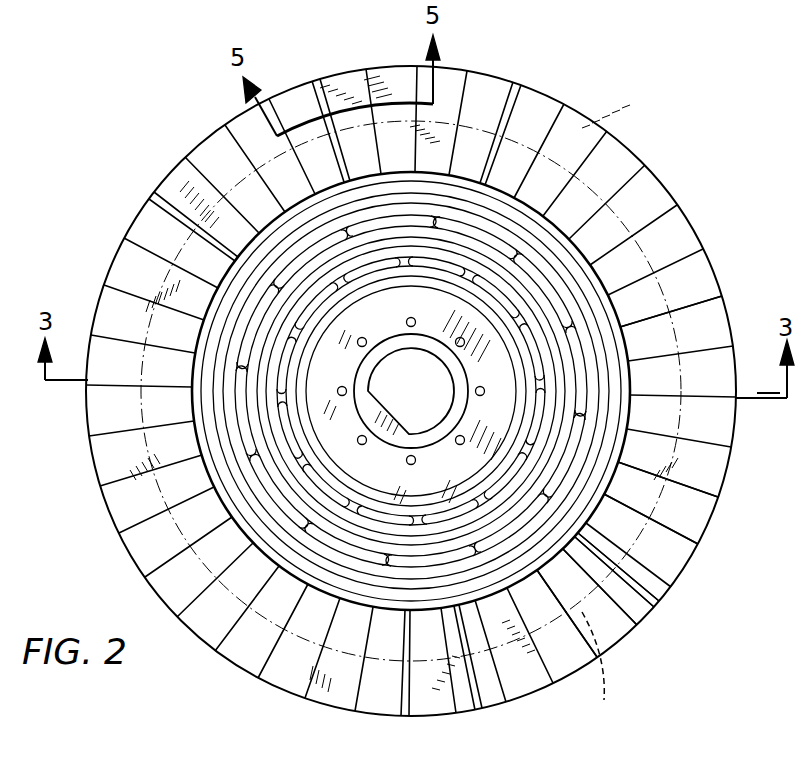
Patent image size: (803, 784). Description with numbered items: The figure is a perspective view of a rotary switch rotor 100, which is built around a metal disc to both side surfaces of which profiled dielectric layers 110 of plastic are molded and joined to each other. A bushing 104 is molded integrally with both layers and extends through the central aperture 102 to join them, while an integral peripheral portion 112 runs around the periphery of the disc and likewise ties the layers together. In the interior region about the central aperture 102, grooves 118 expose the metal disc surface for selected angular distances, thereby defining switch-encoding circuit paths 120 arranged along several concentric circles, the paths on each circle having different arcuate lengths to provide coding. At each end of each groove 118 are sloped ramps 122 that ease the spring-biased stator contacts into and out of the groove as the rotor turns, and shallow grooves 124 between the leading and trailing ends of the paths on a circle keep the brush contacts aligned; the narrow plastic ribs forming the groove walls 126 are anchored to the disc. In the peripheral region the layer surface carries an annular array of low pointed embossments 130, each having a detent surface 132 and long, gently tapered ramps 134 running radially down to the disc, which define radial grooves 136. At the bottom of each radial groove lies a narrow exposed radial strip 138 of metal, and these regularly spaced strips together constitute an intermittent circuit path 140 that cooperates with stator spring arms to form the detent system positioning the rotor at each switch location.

The rotor 100 is at (660, 86).
The central aperture 102 is at (428, 414).
The bushing 104 is at (404, 432).
The profiled dielectric layers 110 is at (646, 192).
The integral peripheral portion 112 is at (683, 236).
The grooves 118 is at (606, 432).
The switch-encoding circuit paths 120 is at (600, 402).
The ramps 122 is at (606, 382).
The shallow grooves 124 is at (563, 299).
The groove walls 126 is at (580, 310).
The pointed embossments 130 is at (699, 526).
The detent surface 132 is at (680, 506).
The tapered ramps 134 is at (660, 606).
The radial grooves 136 is at (642, 590).
The exposed radial strip 138 is at (628, 604).
The intermittent circuit path 140 is at (605, 672).